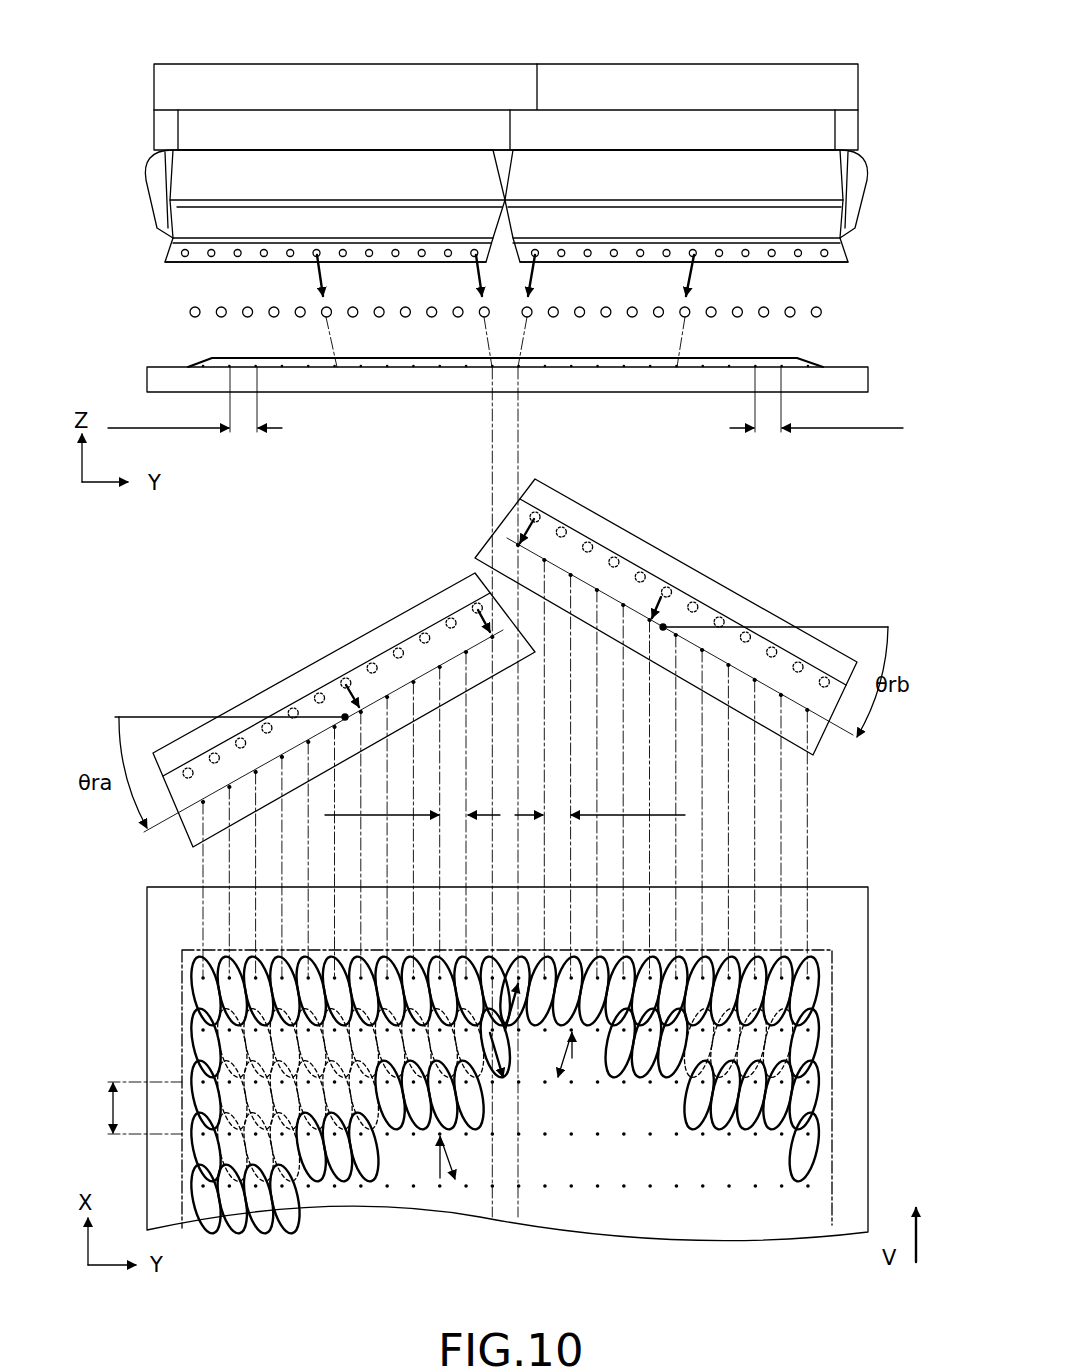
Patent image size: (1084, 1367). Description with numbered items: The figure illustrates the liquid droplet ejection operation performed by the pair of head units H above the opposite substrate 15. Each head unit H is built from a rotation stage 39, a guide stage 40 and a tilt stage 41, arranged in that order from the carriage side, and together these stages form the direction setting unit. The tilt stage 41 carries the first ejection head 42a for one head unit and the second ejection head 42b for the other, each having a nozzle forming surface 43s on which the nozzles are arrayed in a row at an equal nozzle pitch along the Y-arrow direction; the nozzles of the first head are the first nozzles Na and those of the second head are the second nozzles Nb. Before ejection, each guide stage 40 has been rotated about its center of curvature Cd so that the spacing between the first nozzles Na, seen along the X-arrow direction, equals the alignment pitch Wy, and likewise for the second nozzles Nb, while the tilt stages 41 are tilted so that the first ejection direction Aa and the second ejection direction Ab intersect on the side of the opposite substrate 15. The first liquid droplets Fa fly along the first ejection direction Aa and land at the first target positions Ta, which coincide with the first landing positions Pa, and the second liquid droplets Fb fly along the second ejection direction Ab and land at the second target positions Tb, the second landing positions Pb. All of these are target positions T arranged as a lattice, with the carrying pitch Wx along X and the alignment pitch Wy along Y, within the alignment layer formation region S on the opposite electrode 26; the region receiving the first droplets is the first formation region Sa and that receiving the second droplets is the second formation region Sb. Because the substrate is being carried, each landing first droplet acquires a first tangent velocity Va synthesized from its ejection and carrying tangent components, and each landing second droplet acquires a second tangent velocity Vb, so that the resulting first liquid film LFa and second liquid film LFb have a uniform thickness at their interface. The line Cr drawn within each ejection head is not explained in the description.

The rotation stage 39 is at (154, 85).
The guide stage 40 is at (178, 125).
The tilt stage 41 is at (160, 185).
The first ejection head 42a is at (172, 240).
The second ejection head 42b is at (847, 240).
The nozzle forming surface 43s is at (178, 263).
The opposite electrode 26 is at (190, 364).
The opposite substrate 15 is at (147, 378).
The first nozzle Na is at (238, 258).
The second nozzle Nb is at (798, 258).
The first ejection direction Aa is at (386, 481).
The second ejection direction Ab is at (607, 436).
The first formation region Sa is at (352, 374).
The second formation region Sb is at (665, 374).
The alignment layer formation region S is at (171, 995).
The first liquid droplet Fa is at (274, 318).
The second liquid droplet Fb is at (790, 318).
The first liquid film LFa is at (212, 358).
The second liquid film LFb is at (797, 358).
The first target position Ta is at (492, 367).
The second target position Tb is at (518, 367).
The target position T is at (505, 1082).
The first landing position Pa is at (468, 654).
The second landing position Pb is at (597, 592).
The center of curvature Cd is at (822, 762).
The reference line Cr is at (335, 722).
The alignment pitch Wy is at (505, 591).
The carrying pitch Wx is at (129, 1108).
The first tangent velocity Va is at (350, 1095).
The second tangent velocity Vb is at (659, 1069).
The head unit H is at (228, 27).